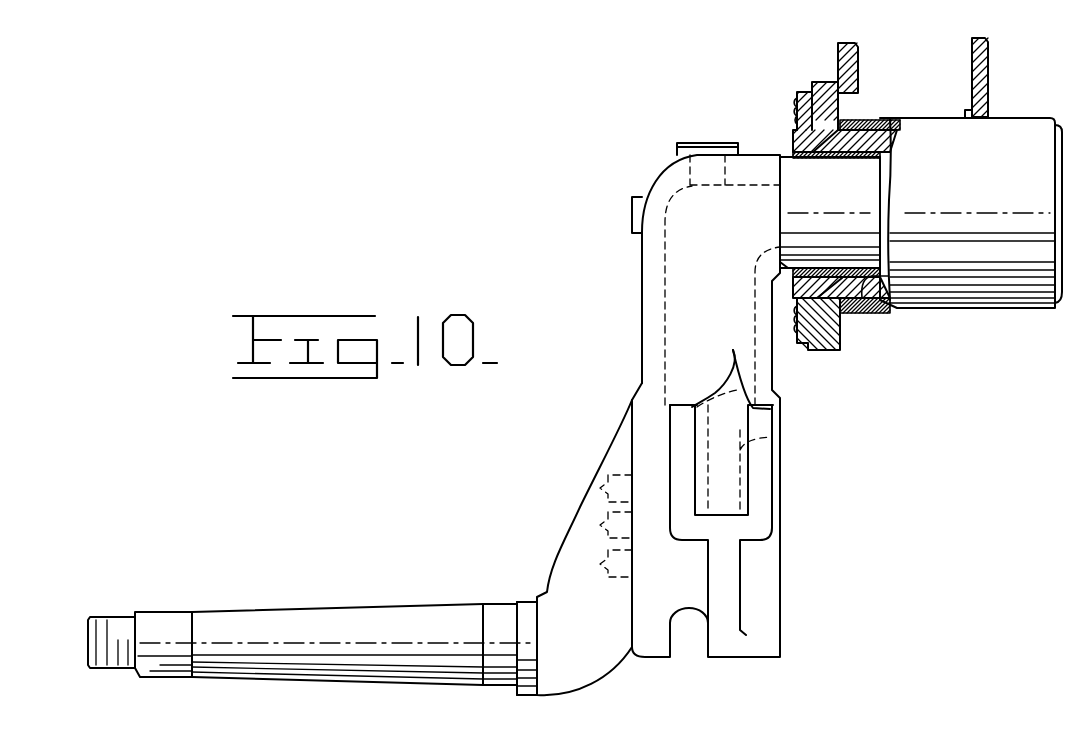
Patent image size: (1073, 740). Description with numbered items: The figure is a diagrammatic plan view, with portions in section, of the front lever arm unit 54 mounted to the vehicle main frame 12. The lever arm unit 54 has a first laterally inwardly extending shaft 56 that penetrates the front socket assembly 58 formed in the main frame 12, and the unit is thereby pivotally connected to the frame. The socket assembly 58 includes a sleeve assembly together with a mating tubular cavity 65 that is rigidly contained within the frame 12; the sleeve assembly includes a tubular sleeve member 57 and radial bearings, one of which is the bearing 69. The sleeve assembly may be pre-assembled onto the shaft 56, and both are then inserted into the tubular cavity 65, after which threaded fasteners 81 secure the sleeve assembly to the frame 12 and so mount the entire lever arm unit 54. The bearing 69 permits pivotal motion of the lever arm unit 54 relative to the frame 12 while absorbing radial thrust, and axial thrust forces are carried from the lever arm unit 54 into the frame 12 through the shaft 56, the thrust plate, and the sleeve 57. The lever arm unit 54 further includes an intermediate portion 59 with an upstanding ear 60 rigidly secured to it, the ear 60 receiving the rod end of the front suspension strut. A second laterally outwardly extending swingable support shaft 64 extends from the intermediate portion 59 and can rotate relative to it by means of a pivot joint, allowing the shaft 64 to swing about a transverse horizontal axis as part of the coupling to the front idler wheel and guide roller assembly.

The main frame 12 is at (973, 58).
The front lever arm unit 54 is at (846, 449).
The first laterally inwardly extending shaft 56 is at (846, 200).
The tubular sleeve member 57 is at (855, 137).
The front socket assembly 58 is at (773, 139).
The intermediate portion 59 is at (653, 365).
The upstanding ears 60 is at (733, 350).
The second laterally outwardly extending swingable support shaft 64 is at (332, 612).
The mating tubular cavity 65 is at (885, 293).
The radial bearing 69 is at (860, 161).
The threaded fasteners 81 is at (791, 110).